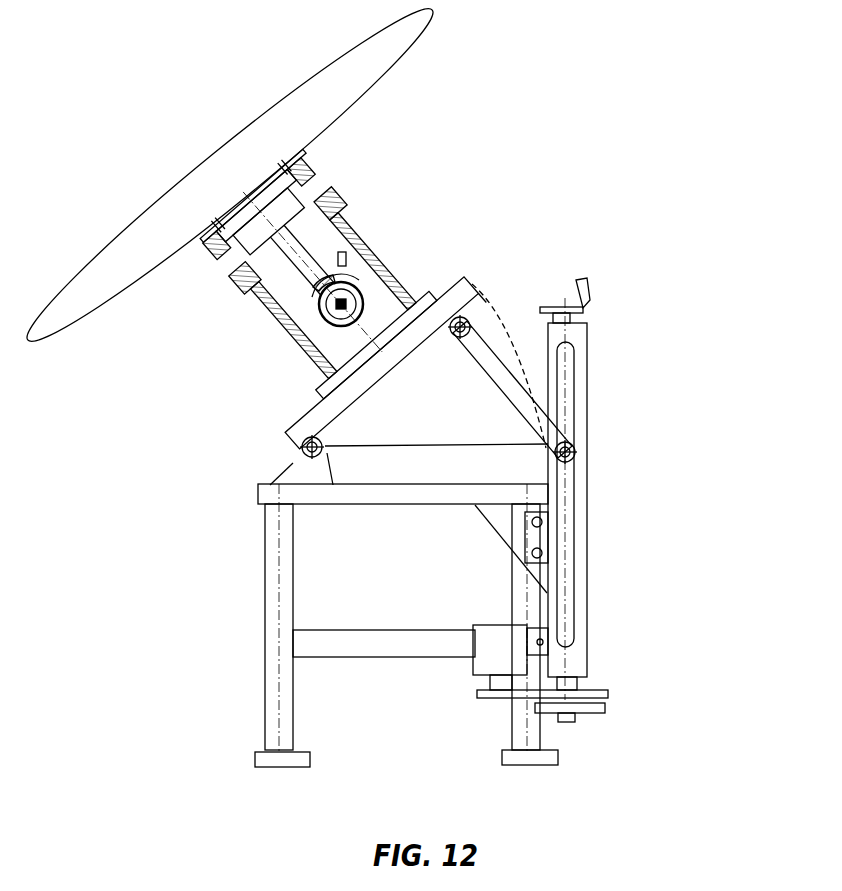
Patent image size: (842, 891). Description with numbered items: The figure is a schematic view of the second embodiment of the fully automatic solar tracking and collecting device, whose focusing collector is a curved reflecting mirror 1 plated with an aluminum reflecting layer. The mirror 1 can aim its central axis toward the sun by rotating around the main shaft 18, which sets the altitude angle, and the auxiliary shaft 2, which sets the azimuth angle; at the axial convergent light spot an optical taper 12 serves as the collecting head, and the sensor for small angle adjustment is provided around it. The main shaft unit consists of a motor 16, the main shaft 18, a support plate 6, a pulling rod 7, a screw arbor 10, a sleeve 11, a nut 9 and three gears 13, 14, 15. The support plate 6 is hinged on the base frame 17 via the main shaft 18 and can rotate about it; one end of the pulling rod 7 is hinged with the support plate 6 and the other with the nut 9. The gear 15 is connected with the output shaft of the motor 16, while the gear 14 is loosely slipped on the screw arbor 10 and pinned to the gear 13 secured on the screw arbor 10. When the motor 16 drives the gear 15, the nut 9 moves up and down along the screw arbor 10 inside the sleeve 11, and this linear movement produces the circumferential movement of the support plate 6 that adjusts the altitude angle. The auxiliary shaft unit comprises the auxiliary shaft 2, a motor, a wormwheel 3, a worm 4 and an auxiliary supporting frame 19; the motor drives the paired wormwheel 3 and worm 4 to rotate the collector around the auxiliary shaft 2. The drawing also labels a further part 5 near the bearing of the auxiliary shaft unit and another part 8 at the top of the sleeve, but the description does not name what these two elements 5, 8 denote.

The curved reflecting mirror 1 is at (212, 186).
The auxiliary shaft 2 is at (258, 267).
The wormwheel 3 is at (328, 306).
The worm 4 is at (303, 322).
The bearing cap bolt 5 is at (340, 258).
The support plate 6 is at (388, 350).
The pulling rod 7 is at (504, 380).
The locking handle 8 is at (585, 284).
The nut 9 is at (563, 428).
The screw arbor 10 is at (570, 560).
The sleeve 11 is at (577, 655).
The optical taper 12 is at (585, 690).
The gear 13 is at (587, 705).
The gear 14 is at (537, 703).
The gear 15 is at (490, 693).
The motor 16 is at (488, 645).
The base frame 17 is at (280, 625).
The main shaft 18 is at (303, 446).
The auxiliary supporting frame 19 is at (300, 350).